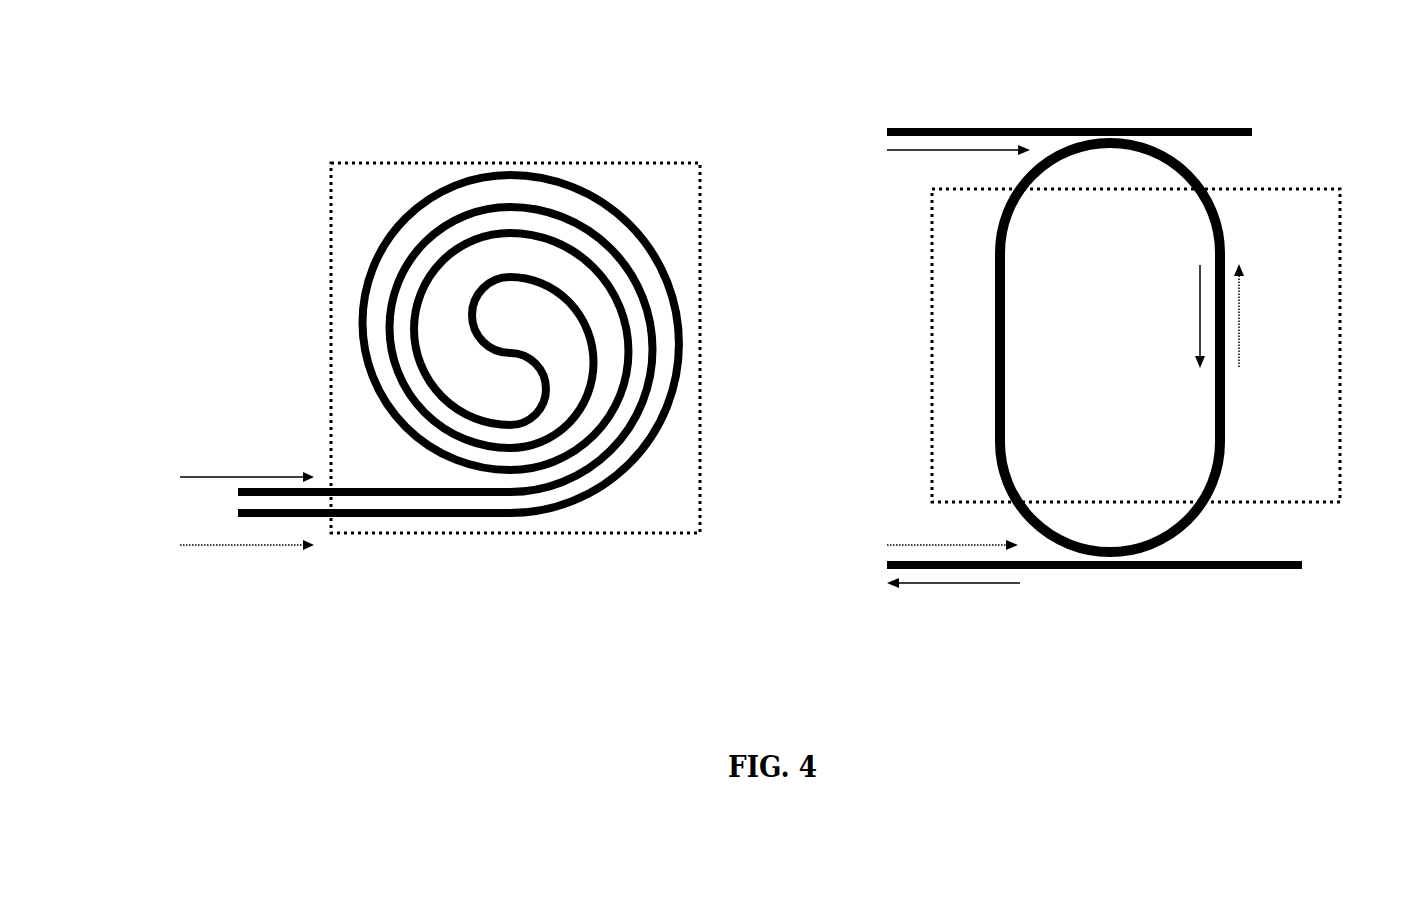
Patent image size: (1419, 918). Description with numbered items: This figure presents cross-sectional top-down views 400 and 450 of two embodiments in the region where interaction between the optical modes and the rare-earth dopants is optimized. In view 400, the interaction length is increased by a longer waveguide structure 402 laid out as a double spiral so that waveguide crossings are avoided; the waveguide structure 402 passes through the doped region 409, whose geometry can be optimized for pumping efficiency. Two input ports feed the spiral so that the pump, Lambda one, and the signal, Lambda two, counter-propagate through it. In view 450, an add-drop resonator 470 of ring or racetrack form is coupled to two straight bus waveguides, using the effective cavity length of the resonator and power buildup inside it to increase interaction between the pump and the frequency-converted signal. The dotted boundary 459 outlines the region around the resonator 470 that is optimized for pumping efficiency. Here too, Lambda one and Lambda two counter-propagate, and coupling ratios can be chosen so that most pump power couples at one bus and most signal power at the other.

The top-down view 400 is at (258, 68).
The waveguide structure 402 is at (355, 325).
The doped region 409 is at (515, 163).
The top-down view 450 is at (858, 88).
The ring resonator region boundary 459 is at (930, 343).
The add-drop resonator 470 is at (1192, 173).